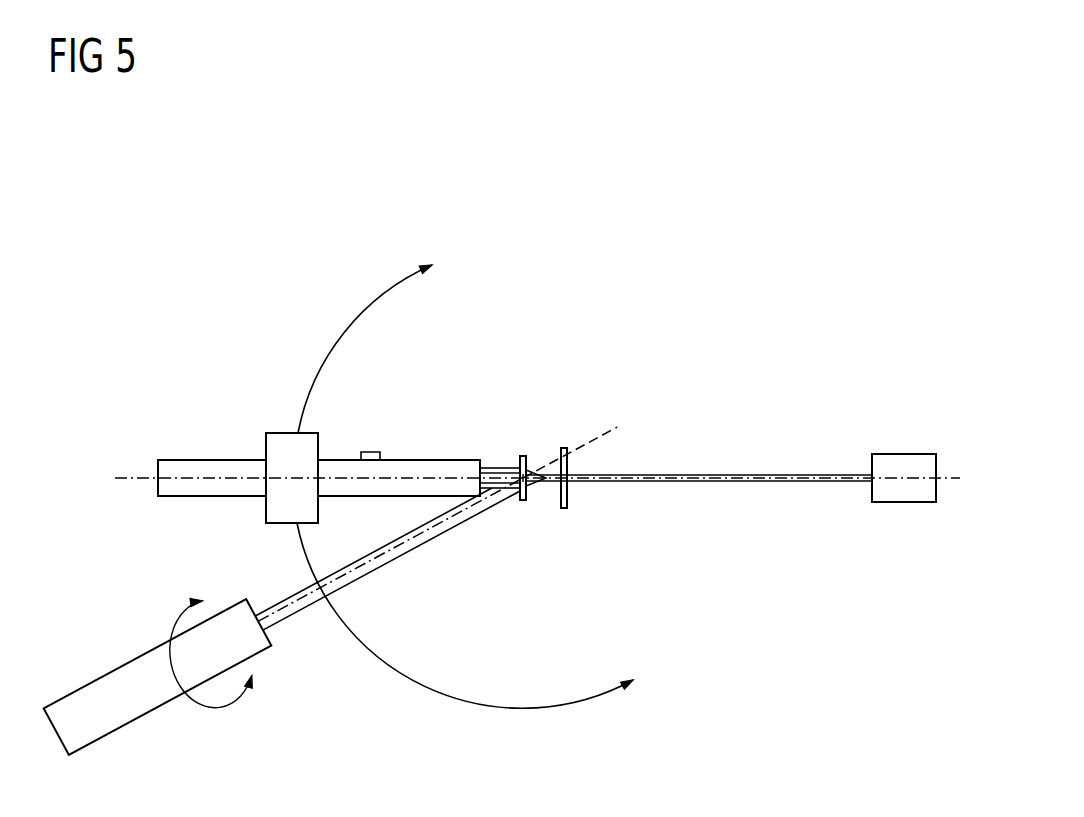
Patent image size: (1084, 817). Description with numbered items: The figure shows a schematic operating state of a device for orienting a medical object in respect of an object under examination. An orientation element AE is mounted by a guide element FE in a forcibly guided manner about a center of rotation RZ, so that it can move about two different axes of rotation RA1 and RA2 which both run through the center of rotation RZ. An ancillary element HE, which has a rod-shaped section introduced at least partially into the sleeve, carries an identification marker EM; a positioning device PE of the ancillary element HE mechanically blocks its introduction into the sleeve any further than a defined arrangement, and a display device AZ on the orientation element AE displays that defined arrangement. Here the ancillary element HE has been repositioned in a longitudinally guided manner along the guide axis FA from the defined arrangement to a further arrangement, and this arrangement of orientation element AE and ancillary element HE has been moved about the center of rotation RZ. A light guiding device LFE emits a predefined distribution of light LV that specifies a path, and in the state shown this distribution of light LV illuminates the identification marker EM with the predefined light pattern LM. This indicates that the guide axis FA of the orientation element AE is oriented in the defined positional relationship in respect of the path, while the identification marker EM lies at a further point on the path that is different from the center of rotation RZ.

The orientation element AE is at (214, 460).
The display device AZ is at (372, 452).
The positioning device PE is at (522, 456).
The ancillary element HE is at (546, 470).
The center of rotation RZ is at (528, 500).
The first axis of rotation RA1 is at (540, 490).
The second axis of rotation RA2 is at (597, 428).
The identification marker EM is at (566, 506).
The predefined light pattern LM is at (582, 490).
The predefined distribution of light LV is at (741, 475).
The light guiding device LFE is at (904, 454).
The guide axis FA is at (948, 484).
The guide element FE is at (284, 620).